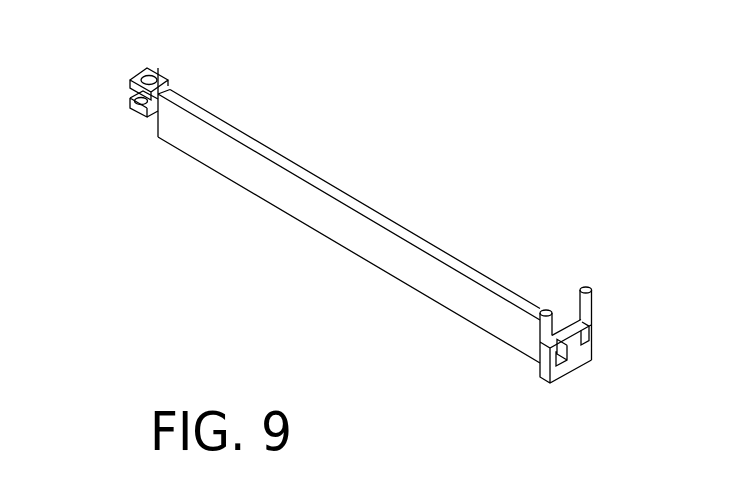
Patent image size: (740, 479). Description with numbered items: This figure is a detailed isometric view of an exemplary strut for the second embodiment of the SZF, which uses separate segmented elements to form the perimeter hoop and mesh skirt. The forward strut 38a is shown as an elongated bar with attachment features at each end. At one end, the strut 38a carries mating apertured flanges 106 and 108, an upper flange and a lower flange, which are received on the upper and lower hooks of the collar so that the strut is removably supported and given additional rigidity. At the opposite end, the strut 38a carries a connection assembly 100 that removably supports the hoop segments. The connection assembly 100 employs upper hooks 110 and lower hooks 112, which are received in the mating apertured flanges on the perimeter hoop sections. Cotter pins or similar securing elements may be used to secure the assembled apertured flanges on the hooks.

The forward strut 38a is at (358, 220).
The connection assembly 100 is at (578, 368).
The upper apertured flange 106 is at (157, 73).
The lower apertured flange 108 is at (146, 117).
The upper hooks 110 is at (585, 288).
The lower hooks 112 is at (591, 342).